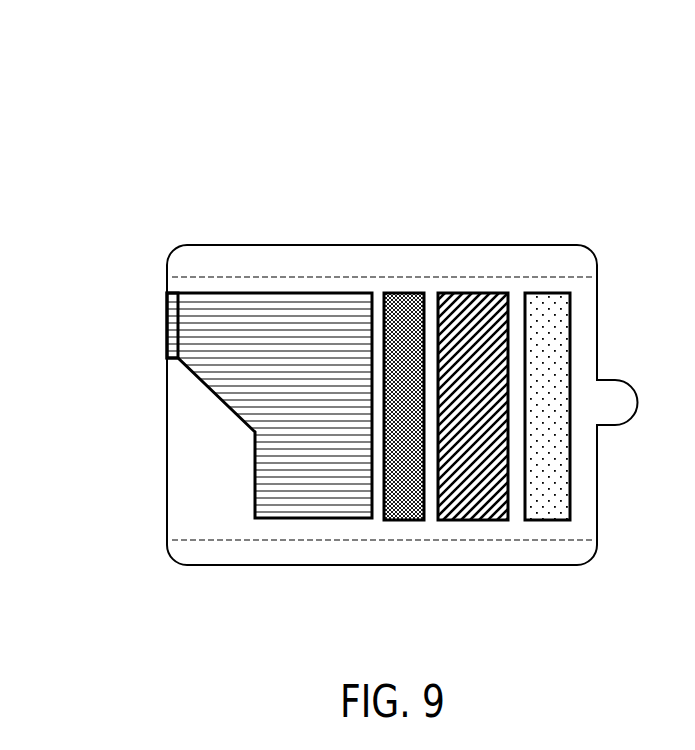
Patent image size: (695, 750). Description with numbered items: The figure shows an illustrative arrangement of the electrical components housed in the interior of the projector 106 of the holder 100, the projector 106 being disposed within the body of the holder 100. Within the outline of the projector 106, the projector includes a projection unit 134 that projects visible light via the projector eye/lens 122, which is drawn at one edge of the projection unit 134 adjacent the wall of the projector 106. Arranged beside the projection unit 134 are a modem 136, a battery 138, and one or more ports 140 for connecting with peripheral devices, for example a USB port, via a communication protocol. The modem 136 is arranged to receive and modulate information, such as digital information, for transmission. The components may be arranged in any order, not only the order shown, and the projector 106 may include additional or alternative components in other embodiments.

The holder 100 is at (150, 126).
The projector 106 is at (220, 273).
The projector eye/lens 122 is at (173, 327).
The projection unit 134 is at (317, 487).
The modem 136 is at (404, 320).
The battery 138 is at (477, 320).
The ports 140 is at (546, 323).